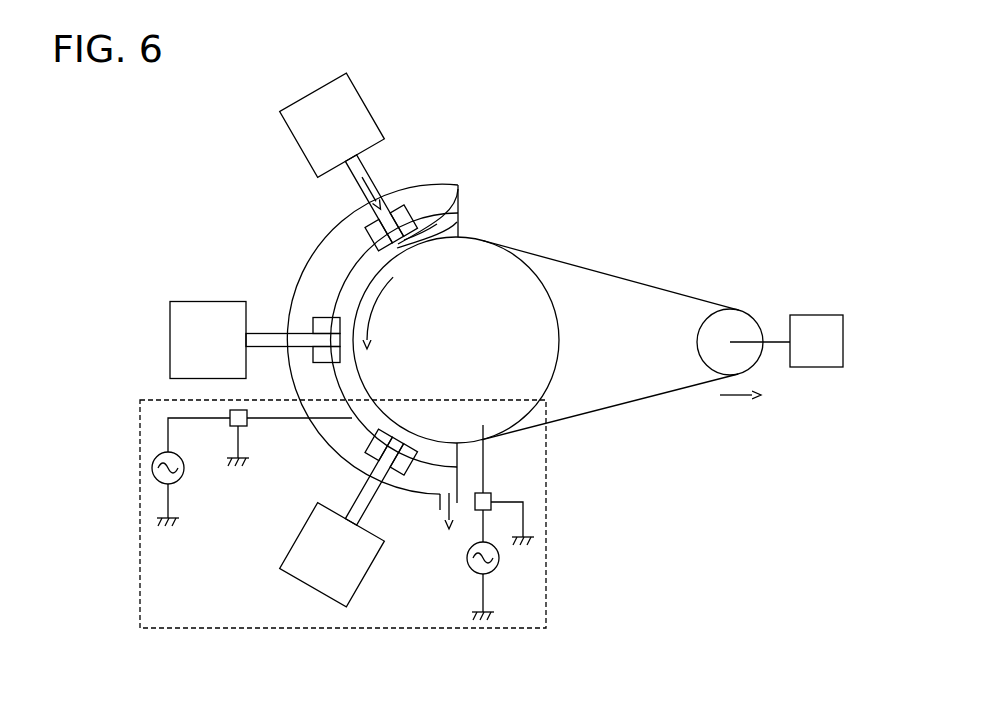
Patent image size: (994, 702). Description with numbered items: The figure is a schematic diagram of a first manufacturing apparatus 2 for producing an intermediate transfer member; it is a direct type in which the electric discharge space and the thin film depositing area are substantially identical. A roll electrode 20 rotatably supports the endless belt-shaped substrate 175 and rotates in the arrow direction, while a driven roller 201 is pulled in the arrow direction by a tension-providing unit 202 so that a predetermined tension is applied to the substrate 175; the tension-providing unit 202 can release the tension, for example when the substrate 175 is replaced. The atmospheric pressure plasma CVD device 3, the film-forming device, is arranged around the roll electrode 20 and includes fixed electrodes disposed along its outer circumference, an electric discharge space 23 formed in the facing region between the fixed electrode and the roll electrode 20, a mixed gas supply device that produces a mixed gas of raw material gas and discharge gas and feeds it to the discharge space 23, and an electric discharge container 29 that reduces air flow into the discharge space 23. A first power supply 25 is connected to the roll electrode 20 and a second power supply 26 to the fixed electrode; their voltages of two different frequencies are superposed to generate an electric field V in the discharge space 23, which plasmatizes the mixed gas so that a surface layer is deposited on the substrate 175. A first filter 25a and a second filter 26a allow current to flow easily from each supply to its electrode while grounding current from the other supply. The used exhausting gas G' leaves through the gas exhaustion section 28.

The manufacturing apparatus 2 is at (228, 138).
The atmospheric pressure plasma CVD device 3 is at (268, 633).
The roll electrode 20 is at (508, 283).
The electric discharge space 23 is at (458, 186).
The first power supply 25 is at (152, 470).
The first filter 25a is at (248, 428).
The second power supply 26 is at (498, 560).
The second filter 26a is at (491, 495).
The gas exhaustion section 28 is at (457, 503).
The electric discharge container 29 is at (313, 280).
The substrate 175 is at (642, 284).
The driven roller 201 is at (745, 318).
The tension-providing unit 202 is at (817, 368).
The used exhausting gas G' is at (422, 511).
The electric field V is at (458, 222).